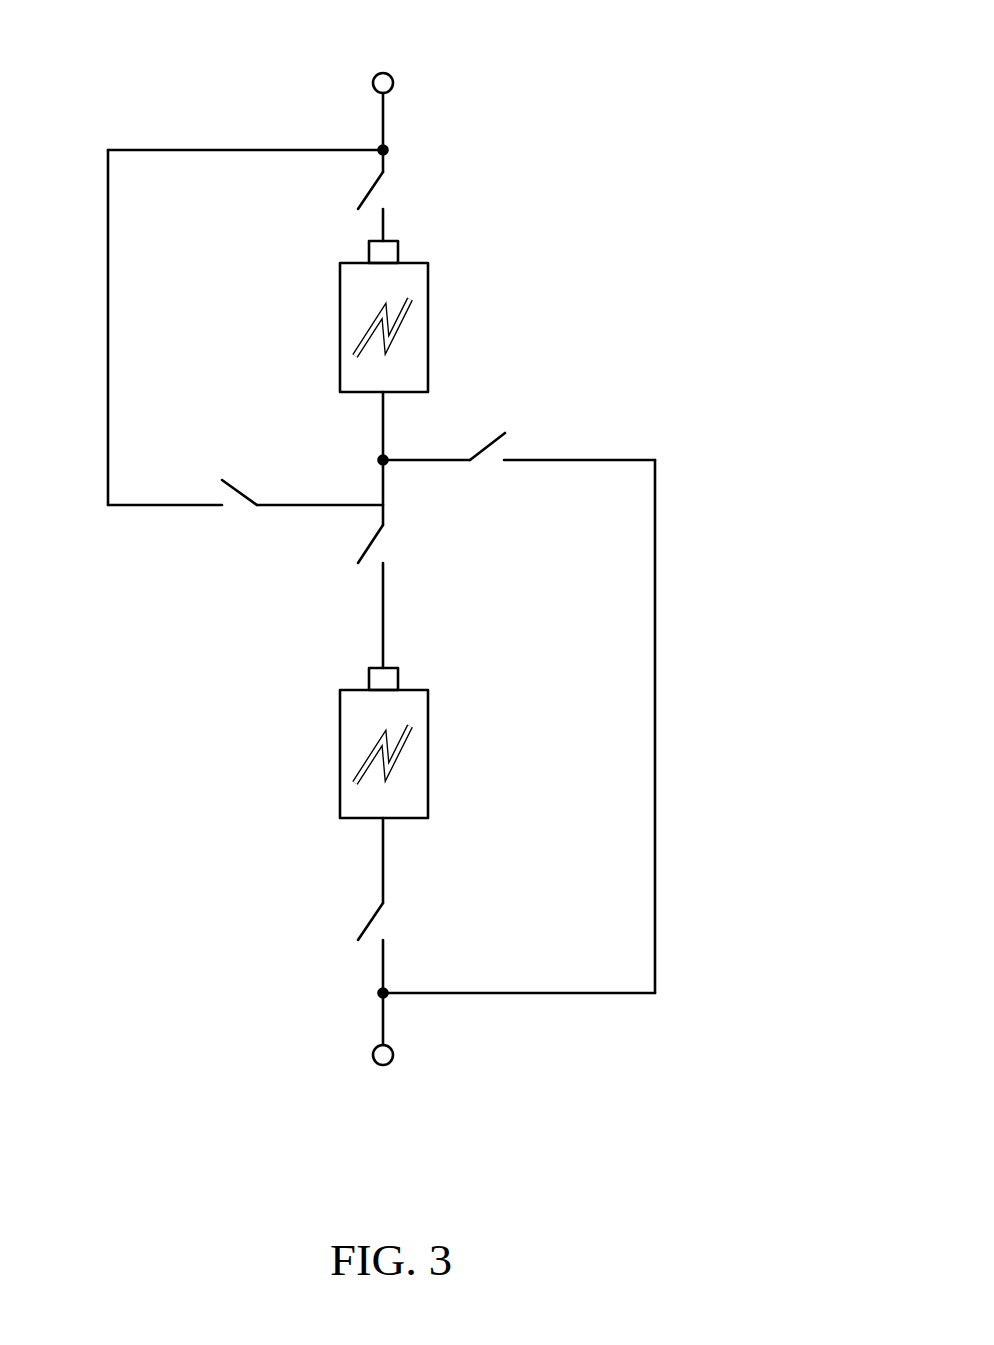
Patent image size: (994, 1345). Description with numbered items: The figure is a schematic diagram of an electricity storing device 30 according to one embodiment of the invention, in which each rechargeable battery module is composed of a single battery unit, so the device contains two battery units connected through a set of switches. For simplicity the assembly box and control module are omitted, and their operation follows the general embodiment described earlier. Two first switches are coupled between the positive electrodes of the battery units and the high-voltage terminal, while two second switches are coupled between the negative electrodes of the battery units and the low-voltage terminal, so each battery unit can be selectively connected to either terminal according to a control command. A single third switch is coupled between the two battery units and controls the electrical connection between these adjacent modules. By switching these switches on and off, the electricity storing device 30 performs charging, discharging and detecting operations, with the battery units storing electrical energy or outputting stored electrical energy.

The electricity storing device 30 is at (622, 66).